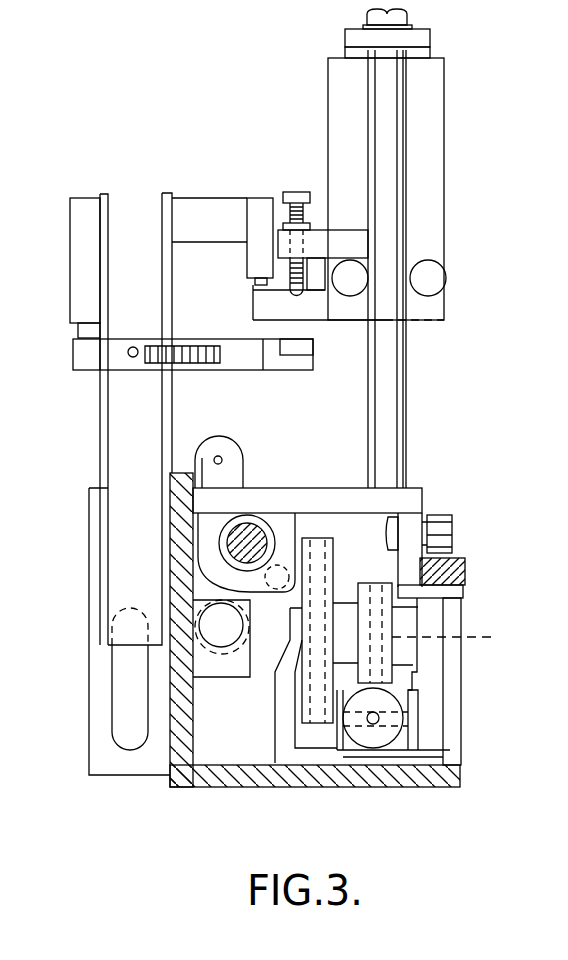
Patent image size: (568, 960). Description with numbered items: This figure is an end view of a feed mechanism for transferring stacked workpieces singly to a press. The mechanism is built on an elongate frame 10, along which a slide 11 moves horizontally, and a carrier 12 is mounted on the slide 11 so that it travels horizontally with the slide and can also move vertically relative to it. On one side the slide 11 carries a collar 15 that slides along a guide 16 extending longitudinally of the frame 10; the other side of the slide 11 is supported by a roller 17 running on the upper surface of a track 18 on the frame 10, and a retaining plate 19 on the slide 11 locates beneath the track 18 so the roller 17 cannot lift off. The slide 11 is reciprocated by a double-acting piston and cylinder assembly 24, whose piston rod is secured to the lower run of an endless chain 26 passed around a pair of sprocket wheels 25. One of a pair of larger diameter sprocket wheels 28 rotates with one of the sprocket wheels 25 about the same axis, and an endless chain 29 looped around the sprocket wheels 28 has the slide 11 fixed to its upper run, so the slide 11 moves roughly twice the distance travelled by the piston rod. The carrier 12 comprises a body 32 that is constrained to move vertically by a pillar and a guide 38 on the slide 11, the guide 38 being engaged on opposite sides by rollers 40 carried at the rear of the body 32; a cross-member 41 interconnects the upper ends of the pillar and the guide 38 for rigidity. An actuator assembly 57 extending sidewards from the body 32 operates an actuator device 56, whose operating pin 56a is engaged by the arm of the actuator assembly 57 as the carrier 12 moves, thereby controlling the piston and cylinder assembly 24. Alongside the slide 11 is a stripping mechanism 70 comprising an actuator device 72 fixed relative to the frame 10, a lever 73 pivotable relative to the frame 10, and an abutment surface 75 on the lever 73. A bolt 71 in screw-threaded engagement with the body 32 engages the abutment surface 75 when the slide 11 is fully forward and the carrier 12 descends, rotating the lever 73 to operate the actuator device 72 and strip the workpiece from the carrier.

The frame 10 is at (448, 670).
The slide 11 is at (393, 507).
The carrier 12 is at (452, 284).
The collar 15 is at (280, 523).
The guide 16 is at (253, 537).
The roller 17 is at (440, 535).
The track 18 is at (453, 575).
The retaining plate 19 is at (430, 593).
The double-acting piston and cylinder assembly 24 is at (385, 750).
The sprocket wheels 25 is at (463, 641).
The endless chain 26 is at (377, 598).
The larger diameter sprocket wheels 28 is at (317, 727).
The endless chain 29 is at (298, 703).
The body 32 is at (422, 170).
The guide 38 is at (388, 403).
The rollers 40 is at (430, 276).
The cross-member 41 is at (413, 40).
The actuator device 56 is at (260, 217).
The operating pin 56a is at (252, 283).
The actuator assembly 57 is at (348, 310).
The stripping mechanism 70 is at (83, 372).
The bolt 71 is at (307, 222).
The actuator device 72 is at (80, 247).
The lever 73 is at (230, 358).
The abutment surface 75 is at (293, 347).